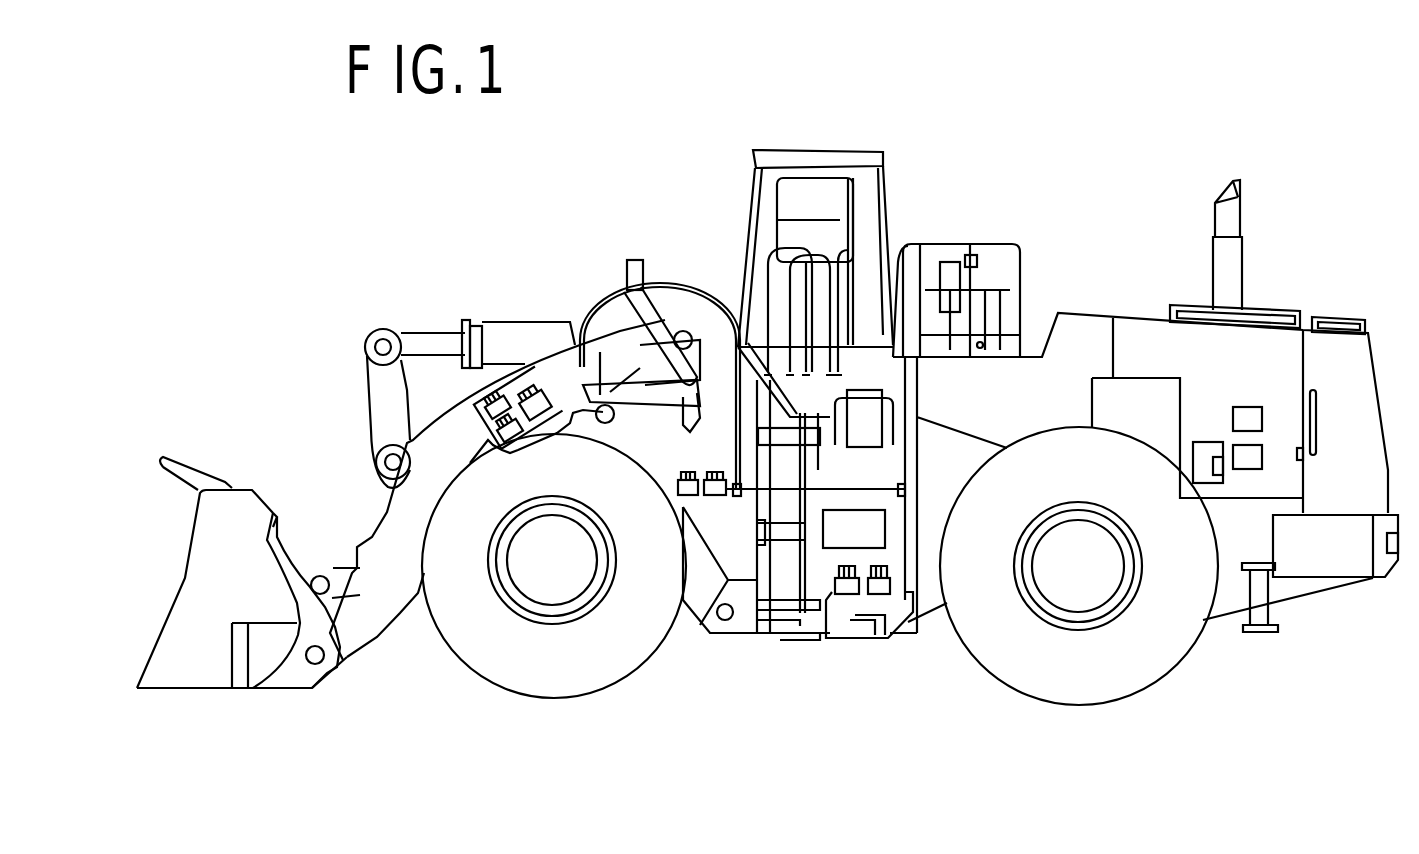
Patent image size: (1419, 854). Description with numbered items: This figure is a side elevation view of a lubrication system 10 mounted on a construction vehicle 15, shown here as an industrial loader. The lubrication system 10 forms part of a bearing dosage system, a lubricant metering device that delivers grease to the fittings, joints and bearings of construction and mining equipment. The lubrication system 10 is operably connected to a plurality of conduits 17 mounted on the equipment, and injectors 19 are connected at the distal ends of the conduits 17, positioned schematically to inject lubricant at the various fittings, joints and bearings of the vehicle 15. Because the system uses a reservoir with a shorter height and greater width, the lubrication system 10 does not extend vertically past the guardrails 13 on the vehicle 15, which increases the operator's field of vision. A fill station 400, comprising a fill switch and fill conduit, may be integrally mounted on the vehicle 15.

The lubrication system 10 is at (1005, 258).
The guardrails 13 is at (1040, 263).
The construction vehicle 15 is at (1380, 345).
The conduits 17 is at (612, 297).
The injectors 19 is at (500, 393).
The fill station 400 is at (870, 532).